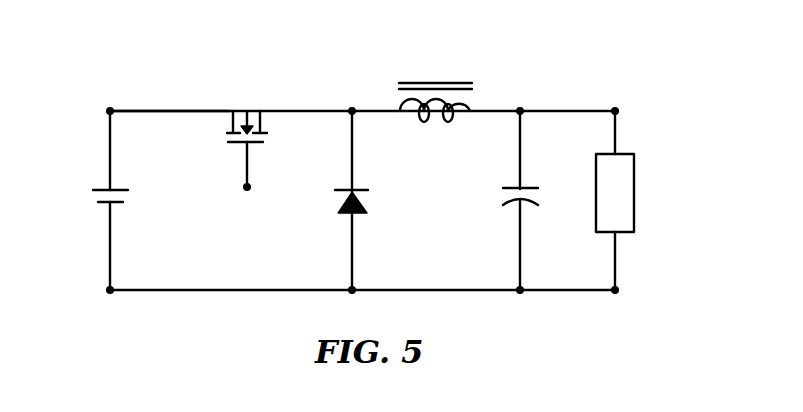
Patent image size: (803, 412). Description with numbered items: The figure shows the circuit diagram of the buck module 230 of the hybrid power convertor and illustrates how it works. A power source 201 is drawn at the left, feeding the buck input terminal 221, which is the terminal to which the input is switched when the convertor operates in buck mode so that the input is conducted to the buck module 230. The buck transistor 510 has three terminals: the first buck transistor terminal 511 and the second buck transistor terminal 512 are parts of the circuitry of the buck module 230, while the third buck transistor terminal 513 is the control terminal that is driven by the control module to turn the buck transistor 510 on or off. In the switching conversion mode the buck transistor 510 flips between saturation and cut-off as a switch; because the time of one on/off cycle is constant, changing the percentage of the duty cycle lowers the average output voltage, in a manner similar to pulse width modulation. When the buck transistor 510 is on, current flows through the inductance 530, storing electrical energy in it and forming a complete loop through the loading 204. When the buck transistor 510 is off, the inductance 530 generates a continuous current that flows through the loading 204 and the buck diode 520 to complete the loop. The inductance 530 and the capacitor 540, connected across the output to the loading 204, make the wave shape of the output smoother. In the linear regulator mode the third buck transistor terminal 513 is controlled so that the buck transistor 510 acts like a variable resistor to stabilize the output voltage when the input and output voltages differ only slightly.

The power source / battery 201 is at (100, 186).
The buck input terminal 221 is at (154, 111).
The buck module 230 is at (653, 77).
The loading 204 is at (636, 157).
The buck transistor 510 is at (244, 149).
The first buck transistor terminal 511 is at (203, 111).
The second buck transistor terminal 512 is at (282, 111).
The third buck transistor terminal 513 is at (245, 188).
The buck diode 520 is at (331, 199).
The inductance 530 is at (429, 130).
The capacitor 540 is at (514, 207).